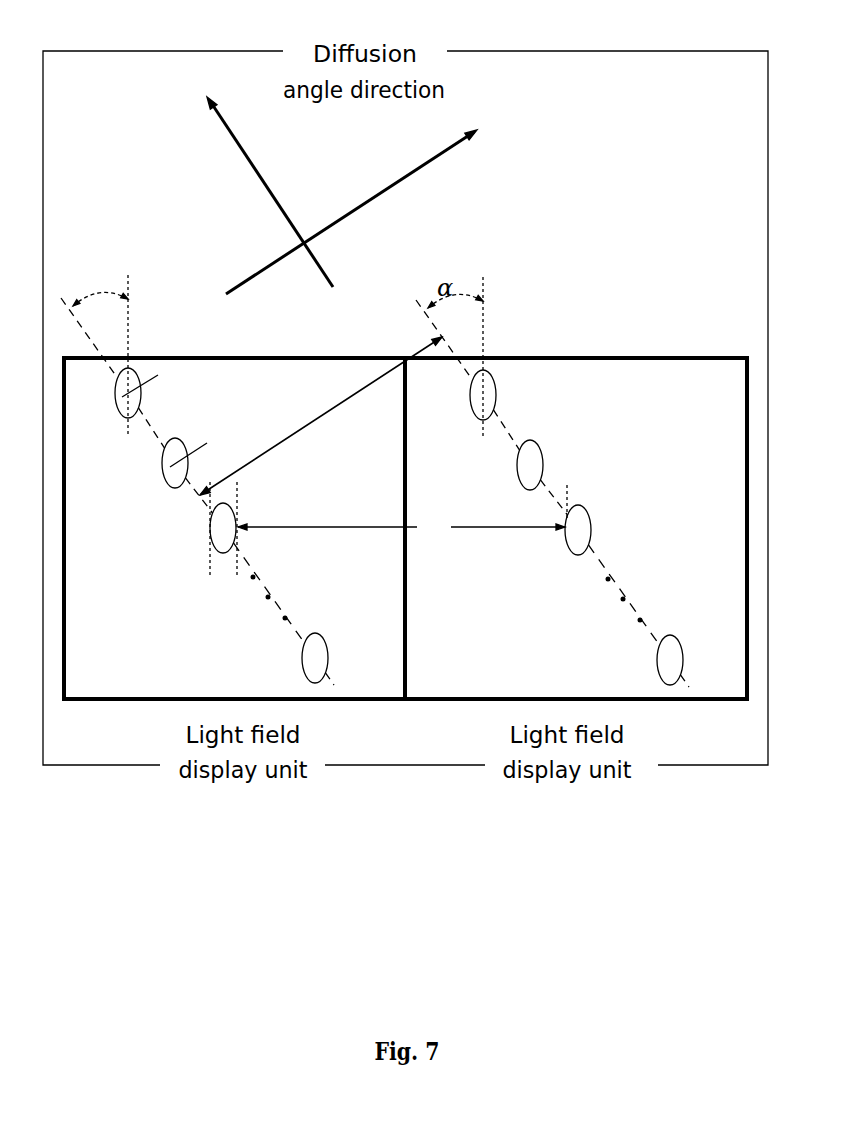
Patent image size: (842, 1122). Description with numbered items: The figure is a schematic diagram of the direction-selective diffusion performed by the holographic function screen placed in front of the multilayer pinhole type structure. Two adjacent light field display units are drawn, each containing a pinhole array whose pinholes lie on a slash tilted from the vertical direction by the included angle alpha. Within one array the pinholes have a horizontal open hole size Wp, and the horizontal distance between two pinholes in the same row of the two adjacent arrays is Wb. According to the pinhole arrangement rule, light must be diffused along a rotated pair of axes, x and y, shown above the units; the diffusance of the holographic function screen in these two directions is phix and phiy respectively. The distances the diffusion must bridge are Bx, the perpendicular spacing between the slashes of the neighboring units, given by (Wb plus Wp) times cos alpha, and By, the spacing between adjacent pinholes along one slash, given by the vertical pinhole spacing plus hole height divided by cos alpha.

The diffusion distance in x direction Bx is at (321, 416).
The diffusion distance in y direction By is at (195, 448).
The horizontal distance between two pinholes in the same row in two adjacent pinhole Wb is at (401, 529).
The horizontal open hole size Wp is at (278, 559).
The included angle between the vertical direction and the slash formed by the pinhol alpha is at (100, 289).
The diffusance in the x direction phix is at (363, 206).
The diffusance in the y direction phiy is at (269, 185).